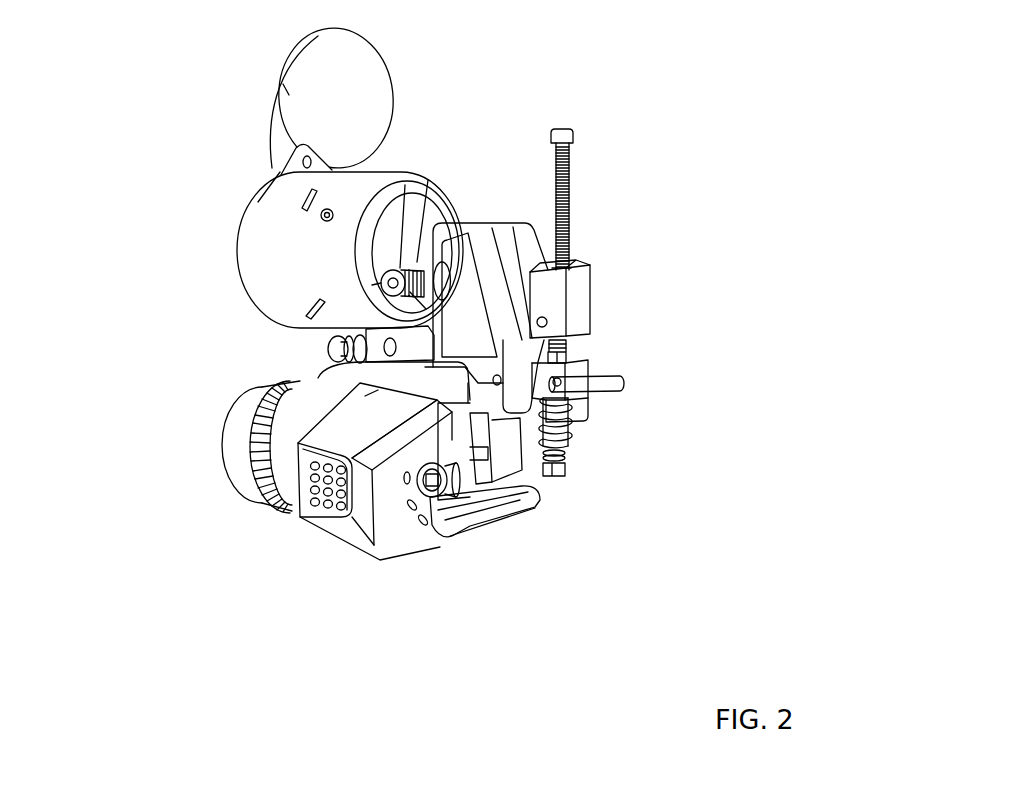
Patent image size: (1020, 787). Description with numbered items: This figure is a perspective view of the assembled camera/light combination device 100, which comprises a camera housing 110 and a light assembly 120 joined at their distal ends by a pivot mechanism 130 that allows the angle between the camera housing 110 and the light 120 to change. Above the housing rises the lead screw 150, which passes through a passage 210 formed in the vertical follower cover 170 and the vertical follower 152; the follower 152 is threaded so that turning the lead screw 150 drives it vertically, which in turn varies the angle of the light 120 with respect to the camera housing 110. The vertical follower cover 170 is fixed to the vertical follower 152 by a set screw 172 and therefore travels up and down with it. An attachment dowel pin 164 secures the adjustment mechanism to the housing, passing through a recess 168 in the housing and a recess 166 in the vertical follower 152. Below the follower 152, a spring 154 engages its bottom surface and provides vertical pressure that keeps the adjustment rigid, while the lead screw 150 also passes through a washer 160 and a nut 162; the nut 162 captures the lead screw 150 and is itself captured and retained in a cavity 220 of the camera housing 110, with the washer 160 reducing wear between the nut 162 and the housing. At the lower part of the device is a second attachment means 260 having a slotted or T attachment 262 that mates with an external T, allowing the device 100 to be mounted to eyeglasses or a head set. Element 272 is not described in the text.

The camera/light combination device 100 is at (96, 63).
The camera housing 110 is at (213, 437).
The light assembly 120 is at (233, 240).
The pivot mechanism 130 is at (328, 350).
The lead screw 150 is at (558, 118).
The vertical follower 152 is at (598, 412).
The spring 154 is at (569, 450).
The washer 160 is at (566, 450).
The nut 162 is at (560, 472).
The attachment (dowel) pin 164 is at (625, 388).
The recess 166 is at (560, 381).
The recess 168 is at (498, 378).
The vertical follower cover 170 is at (583, 292).
The set screw 172 is at (548, 321).
The passage 210 is at (567, 267).
The cavity 220 is at (478, 462).
The second attachment means 260 is at (468, 530).
The slotted or "T" attachment 262 is at (489, 532).
The thumb screw 272 is at (422, 493).